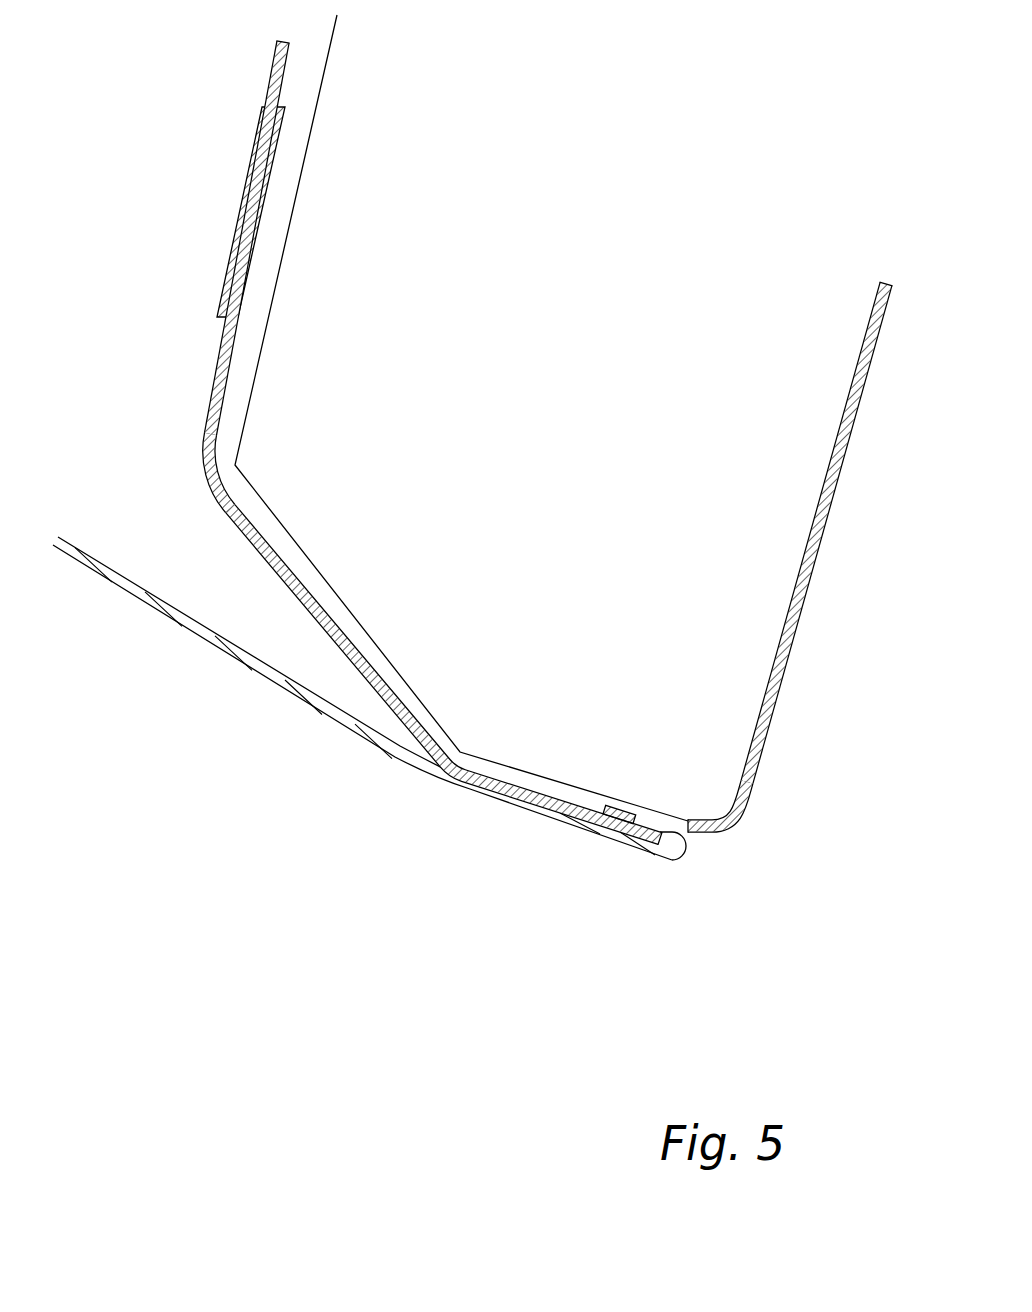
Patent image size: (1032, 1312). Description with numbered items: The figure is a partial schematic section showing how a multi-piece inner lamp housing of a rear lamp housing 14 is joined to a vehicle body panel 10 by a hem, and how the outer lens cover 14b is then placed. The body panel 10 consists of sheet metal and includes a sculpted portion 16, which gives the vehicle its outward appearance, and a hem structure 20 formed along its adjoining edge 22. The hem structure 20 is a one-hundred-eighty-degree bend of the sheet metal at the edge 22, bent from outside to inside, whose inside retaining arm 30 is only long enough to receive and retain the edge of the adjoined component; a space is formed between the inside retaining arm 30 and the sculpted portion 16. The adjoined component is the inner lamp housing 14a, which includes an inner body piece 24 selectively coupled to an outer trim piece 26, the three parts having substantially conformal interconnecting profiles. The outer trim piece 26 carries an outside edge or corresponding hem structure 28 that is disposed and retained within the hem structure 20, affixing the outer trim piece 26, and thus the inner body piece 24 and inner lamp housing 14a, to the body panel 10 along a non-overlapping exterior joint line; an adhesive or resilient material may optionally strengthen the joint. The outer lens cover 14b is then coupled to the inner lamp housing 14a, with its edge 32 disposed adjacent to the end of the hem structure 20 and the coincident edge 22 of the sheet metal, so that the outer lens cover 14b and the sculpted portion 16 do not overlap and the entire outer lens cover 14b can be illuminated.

The body panel 10 is at (369, 790).
The sculpted portion 16 is at (523, 837).
The rear lamp housing 14 is at (474, 496).
The inner lamp housing 14a is at (358, 443).
The outer lens cover 14b is at (790, 630).
The hem structure 20 is at (617, 887).
The edge 22 is at (704, 872).
The inner body piece 24 is at (266, 98).
The outer trim piece 26 is at (205, 420).
The corresponding hem structure 28 is at (642, 812).
The inside retaining arm 30 is at (620, 800).
The edge 32 is at (750, 835).